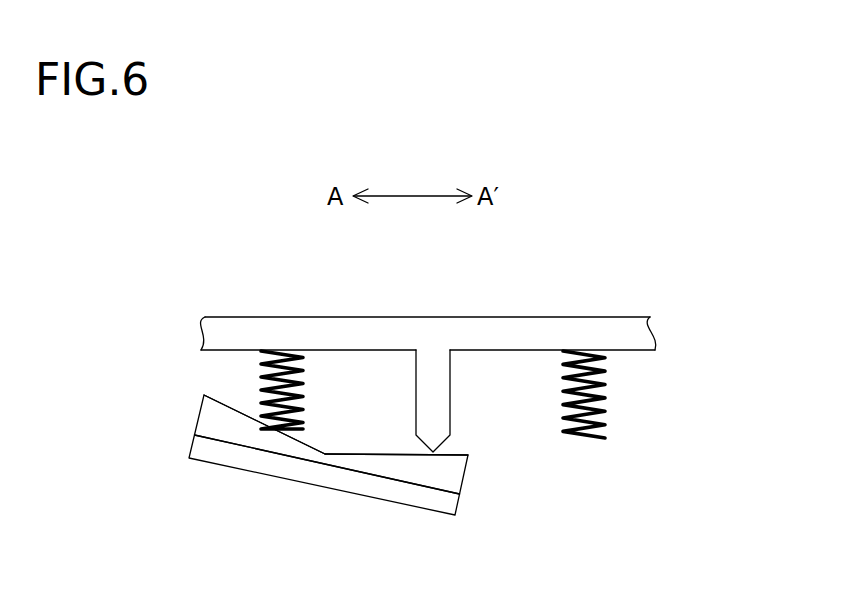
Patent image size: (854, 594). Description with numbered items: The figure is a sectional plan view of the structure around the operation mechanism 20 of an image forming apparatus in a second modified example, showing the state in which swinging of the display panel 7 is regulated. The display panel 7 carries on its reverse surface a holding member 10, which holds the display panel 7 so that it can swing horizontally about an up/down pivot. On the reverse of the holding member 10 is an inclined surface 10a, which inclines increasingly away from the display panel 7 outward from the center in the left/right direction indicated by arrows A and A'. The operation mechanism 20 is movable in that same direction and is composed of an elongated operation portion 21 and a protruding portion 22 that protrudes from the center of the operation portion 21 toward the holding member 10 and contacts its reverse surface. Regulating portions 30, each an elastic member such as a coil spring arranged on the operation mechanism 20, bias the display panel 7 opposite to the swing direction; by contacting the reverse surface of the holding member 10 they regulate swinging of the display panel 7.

The operation mechanism 20 is at (428, 341).
The operation portion 21 is at (523, 333).
The protruding portion 22 is at (435, 372).
The regulating portion 30 is at (263, 375).
The holding member 10 is at (347, 475).
The inclined surface 10a is at (220, 402).
The display panel 7 is at (320, 477).